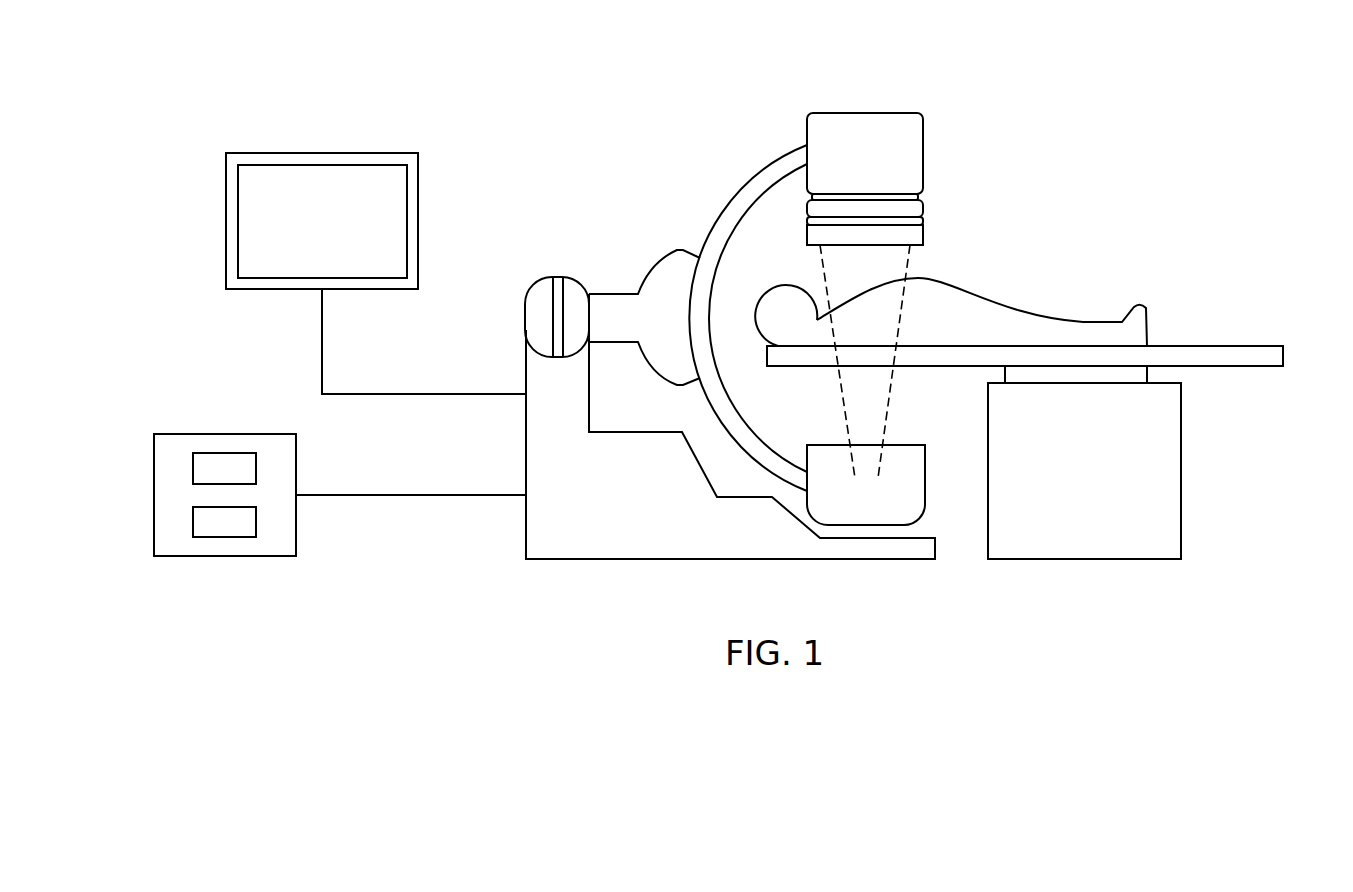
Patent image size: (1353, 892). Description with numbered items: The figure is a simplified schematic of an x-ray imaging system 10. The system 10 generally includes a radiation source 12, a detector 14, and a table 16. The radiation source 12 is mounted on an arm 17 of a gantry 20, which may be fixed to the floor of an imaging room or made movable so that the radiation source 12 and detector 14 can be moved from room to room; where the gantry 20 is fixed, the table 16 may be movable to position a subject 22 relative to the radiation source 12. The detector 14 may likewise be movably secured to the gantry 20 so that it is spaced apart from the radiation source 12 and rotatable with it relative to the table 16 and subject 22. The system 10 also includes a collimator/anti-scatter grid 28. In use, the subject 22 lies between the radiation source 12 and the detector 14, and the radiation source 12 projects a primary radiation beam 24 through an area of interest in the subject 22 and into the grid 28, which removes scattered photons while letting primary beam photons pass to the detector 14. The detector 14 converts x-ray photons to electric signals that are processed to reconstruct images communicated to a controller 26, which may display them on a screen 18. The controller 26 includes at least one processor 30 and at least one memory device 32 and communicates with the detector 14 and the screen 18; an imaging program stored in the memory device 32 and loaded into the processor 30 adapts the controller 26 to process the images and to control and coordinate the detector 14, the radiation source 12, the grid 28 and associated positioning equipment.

The x-ray imaging system 10 is at (298, 109).
The radiation source 12 is at (928, 517).
The detector 14 is at (878, 165).
The table 16 is at (1100, 485).
The arm 17 is at (722, 198).
The screen 18 is at (337, 233).
The gantry 20 is at (526, 458).
The subject 22 is at (1045, 316).
The primary radiation beam 24 is at (909, 273).
The controller 26 is at (340, 497).
The collimator/anti-scatter grid 28 is at (925, 220).
The processor 30 is at (225, 453).
The memory device 32 is at (226, 537).